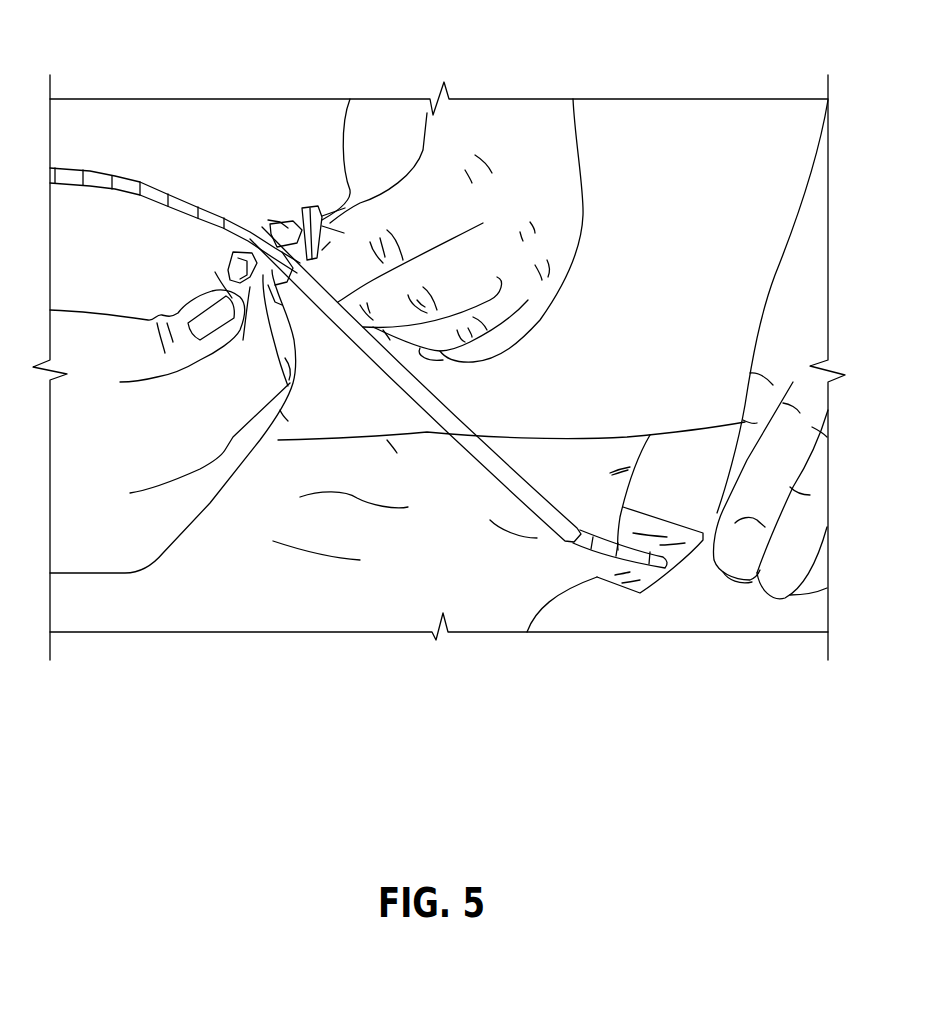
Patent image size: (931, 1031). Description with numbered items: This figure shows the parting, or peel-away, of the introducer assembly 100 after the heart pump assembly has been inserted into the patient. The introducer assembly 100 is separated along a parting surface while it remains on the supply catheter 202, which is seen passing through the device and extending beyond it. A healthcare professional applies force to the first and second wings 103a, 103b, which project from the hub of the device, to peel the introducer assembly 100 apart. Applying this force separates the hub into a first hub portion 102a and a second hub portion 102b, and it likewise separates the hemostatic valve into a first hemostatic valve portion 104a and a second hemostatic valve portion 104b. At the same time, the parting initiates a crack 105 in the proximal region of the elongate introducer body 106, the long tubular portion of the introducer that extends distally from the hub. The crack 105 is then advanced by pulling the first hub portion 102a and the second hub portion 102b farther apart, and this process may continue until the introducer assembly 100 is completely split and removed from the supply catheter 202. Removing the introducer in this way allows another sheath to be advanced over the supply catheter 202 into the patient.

The introducer assembly 100 is at (315, 137).
The first hub portion 102a is at (297, 370).
The second hub portion 102b is at (330, 242).
The first wing 103a is at (250, 292).
The second wing 103b is at (345, 230).
The first hemostatic valve portion 104a is at (247, 228).
The second hemostatic valve portion 104b is at (284, 207).
The crack 105 is at (298, 275).
The elongate introducer body 106 is at (525, 482).
The supply catheter 202 is at (75, 177).